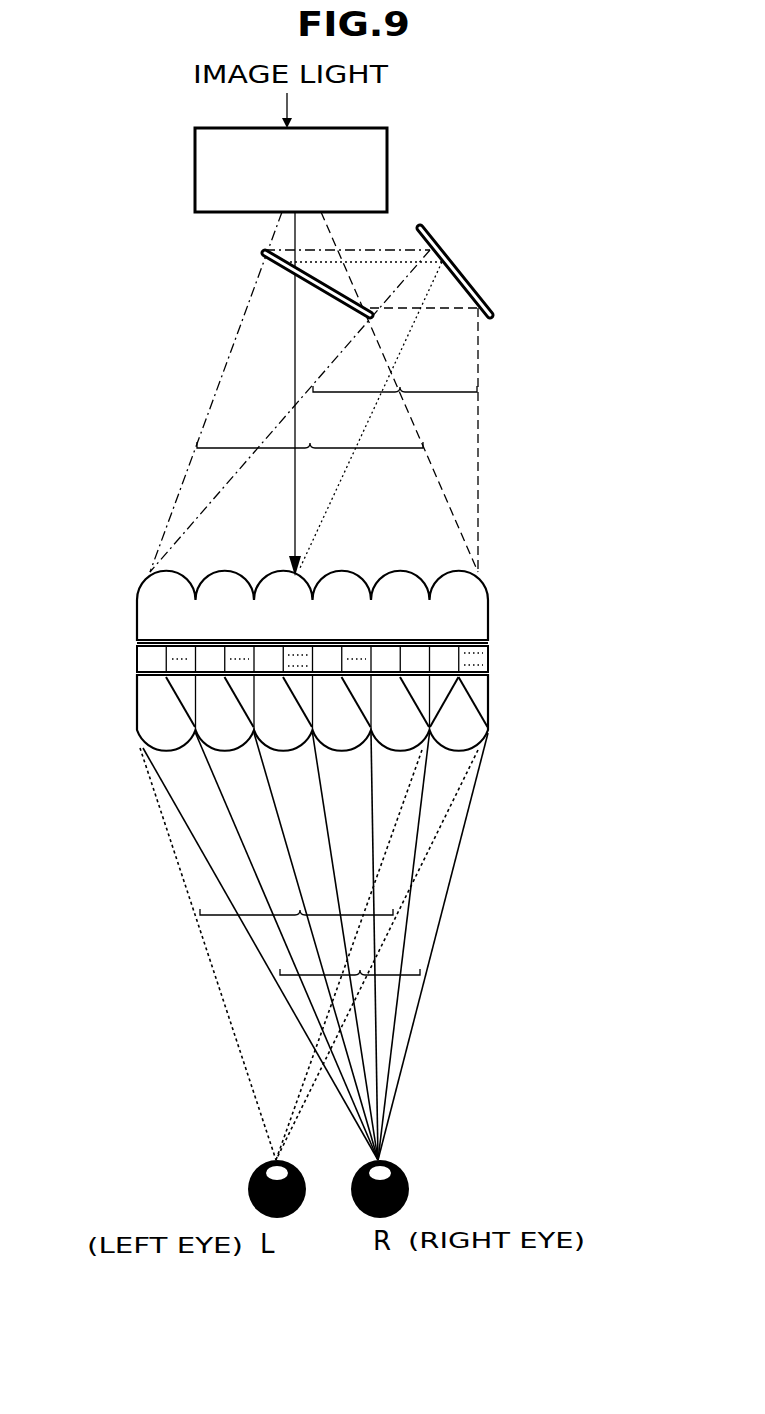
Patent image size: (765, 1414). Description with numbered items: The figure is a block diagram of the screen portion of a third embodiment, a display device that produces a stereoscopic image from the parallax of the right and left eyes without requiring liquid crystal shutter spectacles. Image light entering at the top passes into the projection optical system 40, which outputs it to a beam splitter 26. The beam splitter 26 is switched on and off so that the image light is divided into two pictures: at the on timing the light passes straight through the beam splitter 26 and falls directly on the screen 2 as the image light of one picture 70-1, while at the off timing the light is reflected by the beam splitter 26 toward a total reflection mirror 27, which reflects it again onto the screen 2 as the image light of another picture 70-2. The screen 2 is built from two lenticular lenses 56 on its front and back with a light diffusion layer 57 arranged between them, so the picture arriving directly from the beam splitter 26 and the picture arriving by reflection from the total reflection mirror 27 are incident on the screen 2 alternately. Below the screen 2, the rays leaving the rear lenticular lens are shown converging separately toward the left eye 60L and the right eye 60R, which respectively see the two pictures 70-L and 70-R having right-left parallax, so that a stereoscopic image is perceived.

The projection optical system 40 is at (387, 166).
The beam splitter 26 is at (263, 257).
The total reflection mirror 27 is at (428, 239).
The image light of one picture 70-1 is at (310, 448).
The image light of another picture 70-2 is at (400, 392).
The screen 2 is at (376, 661).
The lenticular lenses 56 is at (473, 596).
The light diffusion layer 57 is at (473, 661).
The left picture 70-L is at (300, 912).
The right picture 70-R is at (358, 972).
The left eye 60L is at (248, 1192).
The right eye 60R is at (410, 1187).